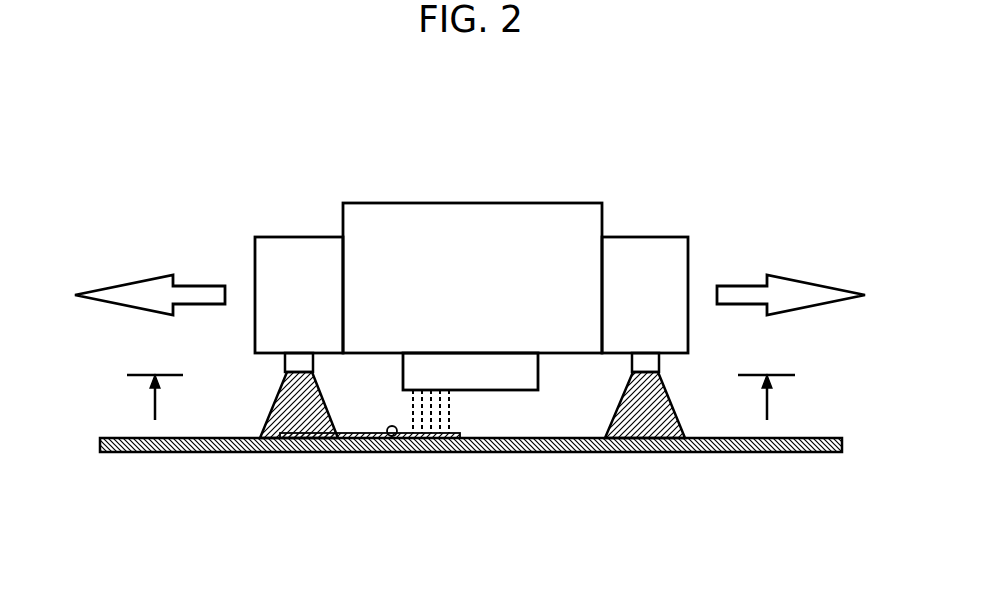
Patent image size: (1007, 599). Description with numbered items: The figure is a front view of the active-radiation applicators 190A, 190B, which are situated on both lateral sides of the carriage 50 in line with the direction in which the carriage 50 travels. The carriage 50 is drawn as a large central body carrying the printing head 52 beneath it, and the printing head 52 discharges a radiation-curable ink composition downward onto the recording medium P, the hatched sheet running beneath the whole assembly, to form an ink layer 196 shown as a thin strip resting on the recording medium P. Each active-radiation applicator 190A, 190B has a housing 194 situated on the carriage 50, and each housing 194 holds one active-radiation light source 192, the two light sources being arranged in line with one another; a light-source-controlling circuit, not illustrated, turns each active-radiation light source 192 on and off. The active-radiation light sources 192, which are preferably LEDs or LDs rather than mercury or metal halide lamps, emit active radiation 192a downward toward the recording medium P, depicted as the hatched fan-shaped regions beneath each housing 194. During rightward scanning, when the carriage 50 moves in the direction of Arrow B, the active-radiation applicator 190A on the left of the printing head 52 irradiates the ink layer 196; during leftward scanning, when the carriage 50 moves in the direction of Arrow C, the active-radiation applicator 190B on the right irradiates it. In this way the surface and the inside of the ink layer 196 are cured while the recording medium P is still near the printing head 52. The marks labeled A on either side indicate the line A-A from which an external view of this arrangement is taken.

The carriage 50 is at (505, 203).
The printing head 52 is at (512, 382).
The housing 194 is at (273, 238).
The active-radiation light source 192 is at (315, 360).
The active radiation 192a is at (299, 420).
The ink layer 196 is at (393, 436).
The active-radiation applicator 190A is at (222, 247).
The active-radiation applicator 190B is at (718, 247).
The recording medium P is at (757, 453).
The line A- A is at (461, 398).
The Arrow B is at (843, 287).
The Arrow C is at (98, 287).